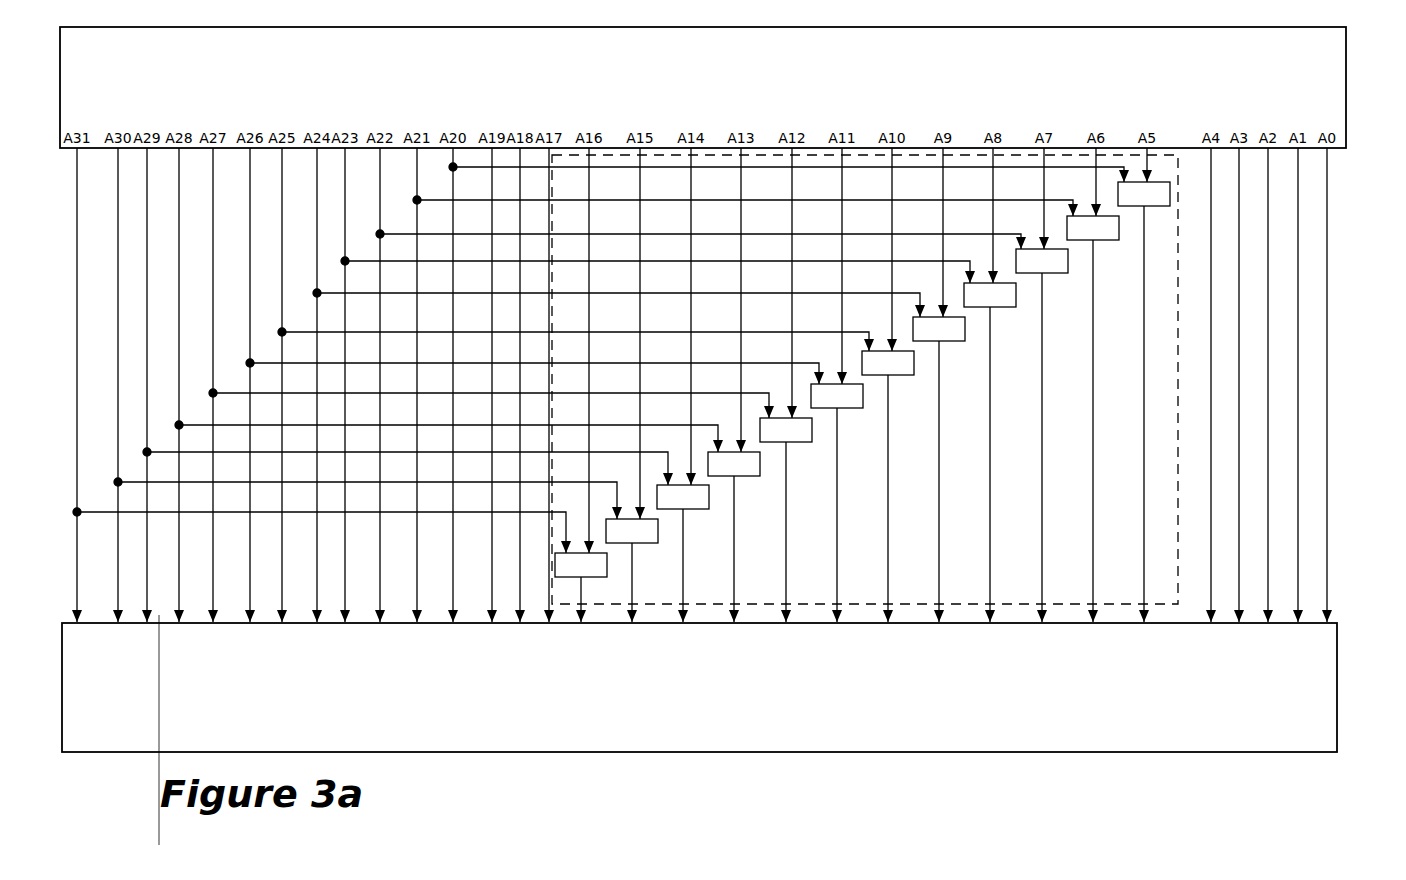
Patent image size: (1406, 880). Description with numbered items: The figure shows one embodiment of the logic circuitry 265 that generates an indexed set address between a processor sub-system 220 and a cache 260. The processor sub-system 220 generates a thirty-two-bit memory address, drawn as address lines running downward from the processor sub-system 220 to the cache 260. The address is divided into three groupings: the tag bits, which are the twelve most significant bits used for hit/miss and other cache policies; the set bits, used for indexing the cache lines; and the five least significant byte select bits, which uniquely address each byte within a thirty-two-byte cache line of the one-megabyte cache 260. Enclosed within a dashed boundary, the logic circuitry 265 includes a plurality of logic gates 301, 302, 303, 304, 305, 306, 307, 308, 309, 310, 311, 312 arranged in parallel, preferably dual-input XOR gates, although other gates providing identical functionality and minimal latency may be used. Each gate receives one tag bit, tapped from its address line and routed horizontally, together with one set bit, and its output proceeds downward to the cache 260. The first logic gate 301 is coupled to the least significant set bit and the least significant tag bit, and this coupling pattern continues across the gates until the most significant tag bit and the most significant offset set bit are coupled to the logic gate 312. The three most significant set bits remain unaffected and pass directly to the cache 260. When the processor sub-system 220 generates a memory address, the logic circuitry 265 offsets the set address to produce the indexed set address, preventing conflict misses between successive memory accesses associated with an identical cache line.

The processor sub-system 220 is at (1394, 71).
The cache 260 is at (1337, 652).
The logic circuitry 265 is at (1178, 428).
The first logic gate 301 is at (1170, 201).
The logic gate 302 is at (1119, 235).
The logic gate 303 is at (1068, 268).
The logic gate 304 is at (1016, 302).
The logic gate 305 is at (965, 336).
The logic gate 306 is at (914, 370).
The logic gate 307 is at (863, 403).
The logic gate 308 is at (812, 437).
The logic gate 309 is at (760, 471).
The logic gate 310 is at (709, 504).
The logic gate 311 is at (658, 538).
The logic gate 312 is at (607, 572).